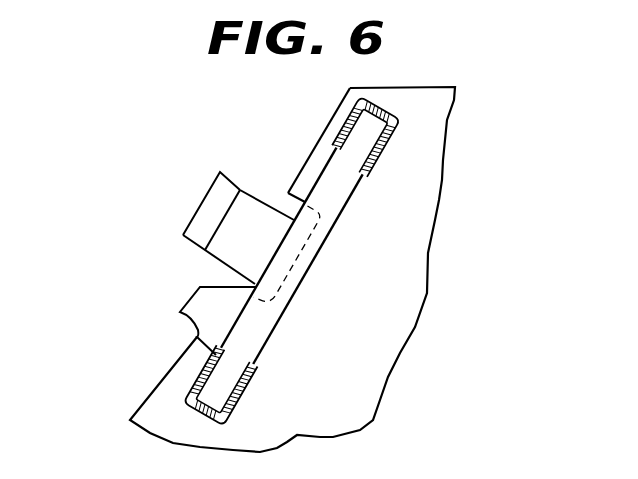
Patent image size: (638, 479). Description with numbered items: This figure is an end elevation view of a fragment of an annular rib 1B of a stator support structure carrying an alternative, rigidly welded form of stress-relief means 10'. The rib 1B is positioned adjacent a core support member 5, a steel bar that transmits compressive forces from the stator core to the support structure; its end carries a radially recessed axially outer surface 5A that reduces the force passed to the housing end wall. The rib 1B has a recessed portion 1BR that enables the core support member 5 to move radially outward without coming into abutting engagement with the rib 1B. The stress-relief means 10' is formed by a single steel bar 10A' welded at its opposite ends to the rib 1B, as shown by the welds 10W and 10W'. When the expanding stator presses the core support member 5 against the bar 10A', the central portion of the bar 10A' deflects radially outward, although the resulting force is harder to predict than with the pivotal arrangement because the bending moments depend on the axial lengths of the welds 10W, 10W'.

The annular rib 1B is at (340, 380).
The recessed portion 1BR is at (252, 284).
The core support member 5 is at (262, 240).
The radially recessed axially outer surface 5A is at (236, 197).
The stress-relief means 10' is at (318, 257).
The single steel bar 10A' is at (215, 280).
The weld 10W is at (420, 113).
The weld 10W' is at (267, 387).